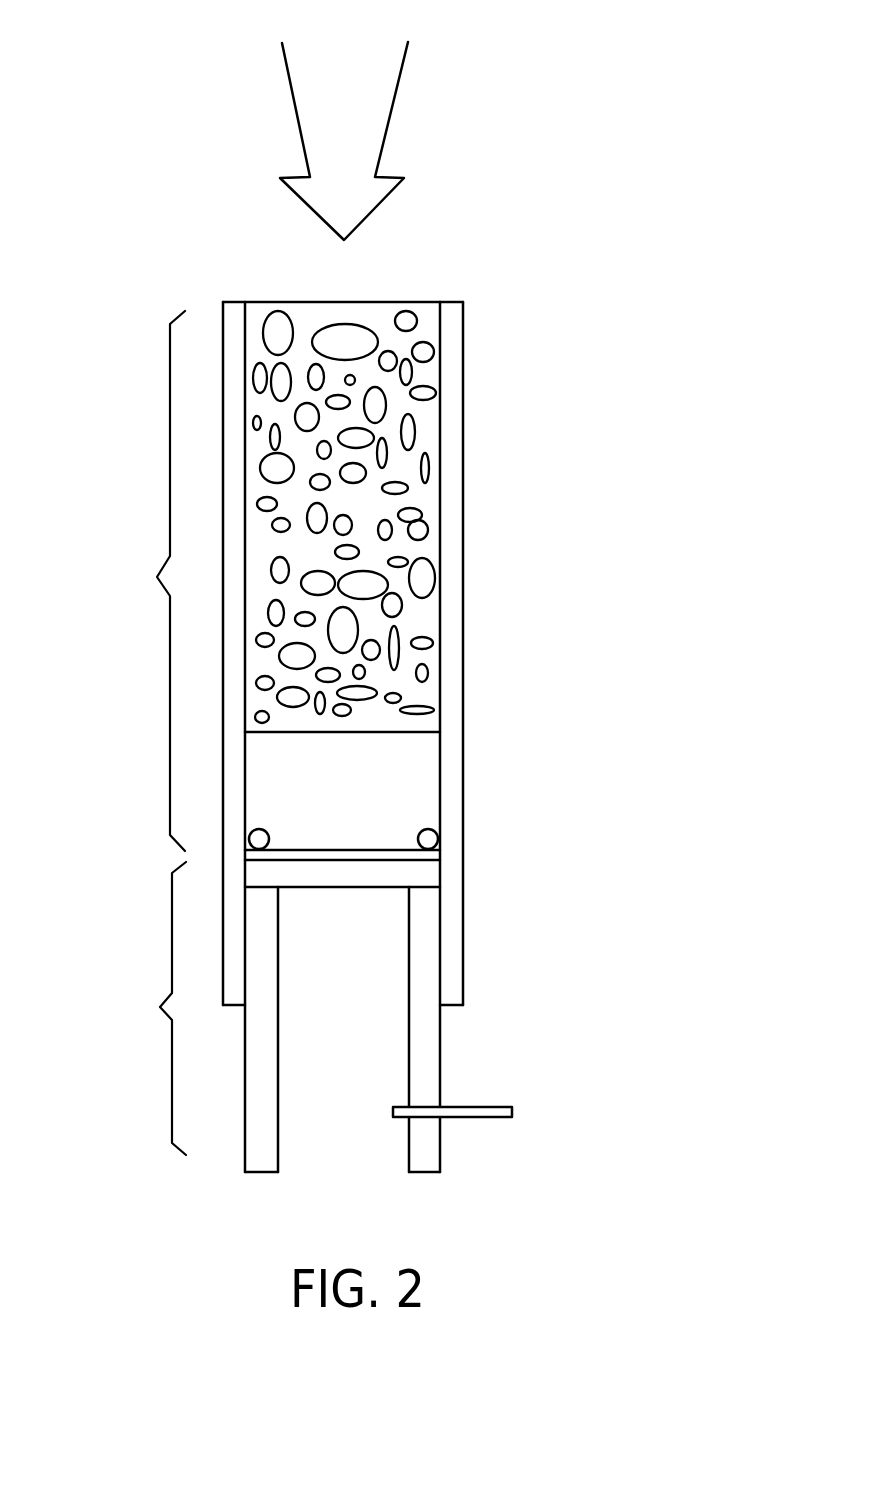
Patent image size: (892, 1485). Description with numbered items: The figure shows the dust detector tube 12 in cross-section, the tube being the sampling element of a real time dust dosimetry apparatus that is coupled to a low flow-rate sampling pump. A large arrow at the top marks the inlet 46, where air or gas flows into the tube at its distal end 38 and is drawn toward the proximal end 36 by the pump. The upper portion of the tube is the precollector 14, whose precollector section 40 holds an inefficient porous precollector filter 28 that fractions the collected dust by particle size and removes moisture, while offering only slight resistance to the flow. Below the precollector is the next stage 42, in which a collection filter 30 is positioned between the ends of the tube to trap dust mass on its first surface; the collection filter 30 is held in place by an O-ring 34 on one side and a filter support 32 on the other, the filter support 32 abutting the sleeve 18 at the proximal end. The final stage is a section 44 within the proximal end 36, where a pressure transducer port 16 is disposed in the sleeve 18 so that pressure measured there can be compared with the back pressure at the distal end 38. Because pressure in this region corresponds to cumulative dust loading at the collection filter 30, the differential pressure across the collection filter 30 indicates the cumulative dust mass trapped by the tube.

The dust detector tube 12 is at (632, 307).
The precollector 14 is at (463, 590).
The pressure transducer port 16 is at (487, 1113).
The sleeve 18 is at (430, 1062).
The precollector filter 28 is at (427, 503).
The collection filter 30 is at (430, 852).
The filter support 32 is at (428, 877).
The O-ring 34 is at (432, 837).
The proximal end 36 is at (151, 1008).
The distal end 38 is at (150, 581).
The precollector section 40 is at (295, 564).
The next stage 42 is at (367, 790).
The section 44 is at (358, 977).
The air or gas flow inlet 46 is at (332, 92).